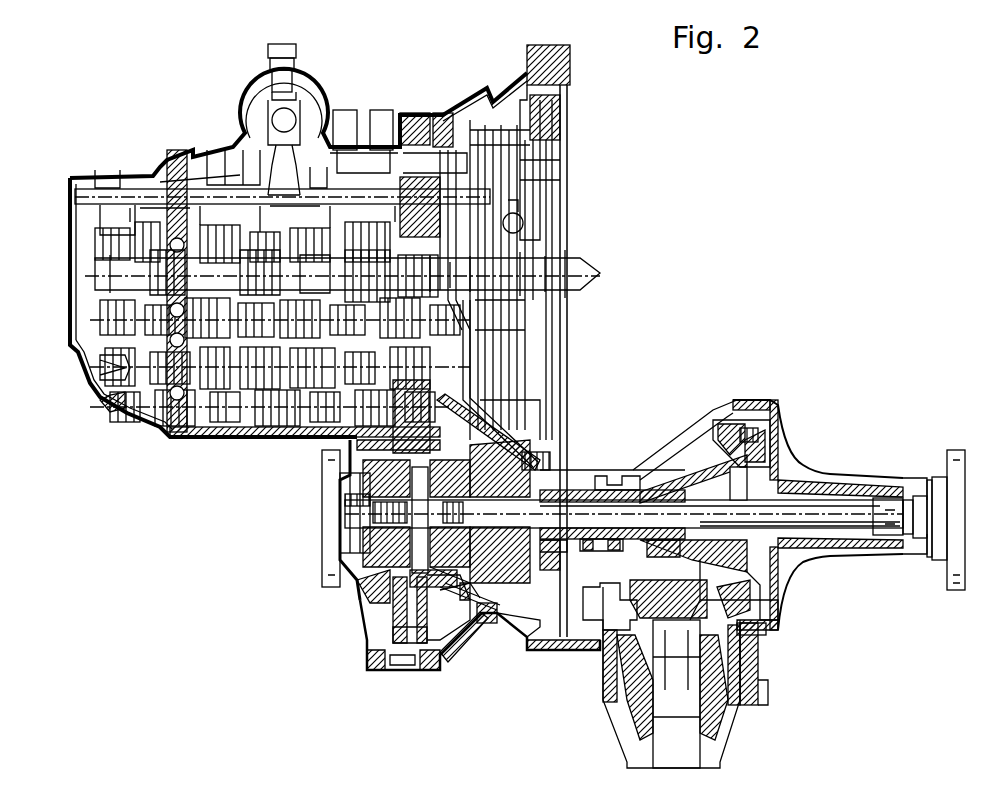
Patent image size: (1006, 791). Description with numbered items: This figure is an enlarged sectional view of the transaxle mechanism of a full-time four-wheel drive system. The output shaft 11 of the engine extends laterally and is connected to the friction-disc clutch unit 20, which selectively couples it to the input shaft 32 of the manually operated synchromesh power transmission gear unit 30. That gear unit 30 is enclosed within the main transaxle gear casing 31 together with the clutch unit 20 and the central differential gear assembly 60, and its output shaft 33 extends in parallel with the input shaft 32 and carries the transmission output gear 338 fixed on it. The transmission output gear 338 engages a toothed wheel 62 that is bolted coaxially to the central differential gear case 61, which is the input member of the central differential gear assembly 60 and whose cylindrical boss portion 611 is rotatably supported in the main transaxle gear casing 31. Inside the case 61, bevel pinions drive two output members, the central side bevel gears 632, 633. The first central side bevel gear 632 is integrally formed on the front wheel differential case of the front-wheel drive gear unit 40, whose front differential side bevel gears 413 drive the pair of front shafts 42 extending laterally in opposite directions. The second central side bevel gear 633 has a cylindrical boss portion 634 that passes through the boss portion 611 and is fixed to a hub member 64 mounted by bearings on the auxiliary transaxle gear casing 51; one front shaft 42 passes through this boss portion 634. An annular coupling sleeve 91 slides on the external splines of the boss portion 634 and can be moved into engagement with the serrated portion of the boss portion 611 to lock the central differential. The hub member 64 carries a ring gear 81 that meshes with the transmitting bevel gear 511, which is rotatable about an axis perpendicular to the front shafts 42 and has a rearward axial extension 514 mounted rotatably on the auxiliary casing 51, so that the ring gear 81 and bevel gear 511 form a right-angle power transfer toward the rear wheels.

The power transmission gear unit 30 is at (59, 237).
The main transaxle gear casing 31 is at (108, 404).
The input shaft 32 is at (314, 246).
The output shaft 33 is at (248, 378).
The transmission output gear 338 is at (393, 252).
The clutch unit 20 is at (568, 160).
The output shaft of the engine 11 is at (595, 262).
The central differential gear case 61 is at (470, 470).
The central differential gear assembly 60 is at (520, 470).
The front differential side bevel gears 413 is at (530, 462).
The annular coupling sleeve 91 is at (612, 480).
The hub member 64 is at (695, 470).
The ring gear 81 is at (722, 422).
The auxiliary transaxle gear casing 51 is at (762, 413).
The front shafts 42 is at (828, 520).
The toothed wheel 62 is at (397, 631).
The front-wheel drive gear unit 40 is at (413, 607).
The second central side bevel gear 633 is at (500, 624).
The first central side bevel gear 632 is at (460, 588).
The cylindrical boss portion 611 is at (567, 545).
The cylindrical boss portion 634 is at (588, 541).
The rearward axial extension 514 is at (607, 683).
The transmitting bevel gear 511 is at (773, 643).